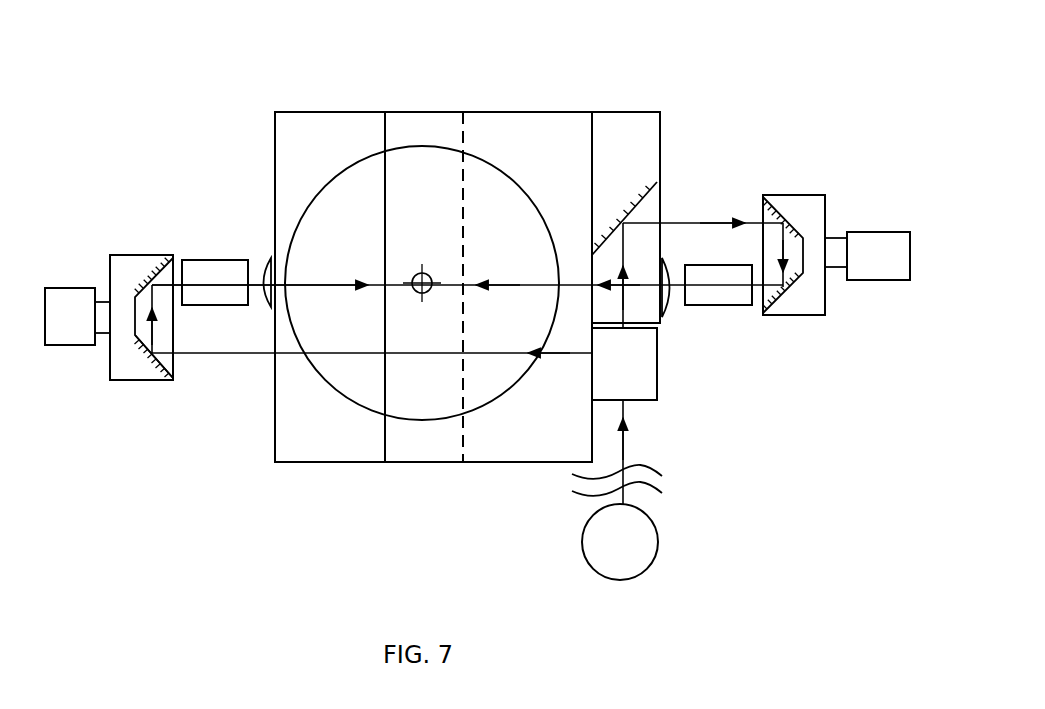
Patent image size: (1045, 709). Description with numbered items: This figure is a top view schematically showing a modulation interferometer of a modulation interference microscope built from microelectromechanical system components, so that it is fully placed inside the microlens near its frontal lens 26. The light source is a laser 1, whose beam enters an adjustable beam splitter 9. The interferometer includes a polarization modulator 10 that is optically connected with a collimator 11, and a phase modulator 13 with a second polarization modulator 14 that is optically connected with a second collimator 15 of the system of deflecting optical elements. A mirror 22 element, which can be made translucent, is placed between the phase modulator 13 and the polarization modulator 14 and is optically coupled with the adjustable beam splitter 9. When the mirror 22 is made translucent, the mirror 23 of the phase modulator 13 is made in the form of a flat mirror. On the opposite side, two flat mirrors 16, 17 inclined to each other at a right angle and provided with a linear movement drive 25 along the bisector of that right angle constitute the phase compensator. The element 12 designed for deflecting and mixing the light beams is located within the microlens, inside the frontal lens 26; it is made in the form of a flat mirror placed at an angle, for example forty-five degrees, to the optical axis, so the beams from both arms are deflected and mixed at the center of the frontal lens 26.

The laser 1 is at (628, 537).
The adjustable beam splitter 9 is at (632, 362).
The polarization modulator 10 is at (193, 275).
The collimator 11 is at (265, 265).
The element designed for deflecting and mixing the light beams 12 is at (417, 292).
The phase modulator 13 is at (897, 245).
The second polarization modulator 14 is at (708, 288).
The second collimator 15 is at (673, 260).
The flat mirror 16 is at (152, 278).
The flat mirror 17 is at (152, 365).
The mirror element that can be made translucent 22 is at (622, 212).
The mirror of the phase modulator 23 is at (802, 220).
The linear movement drive 25 is at (58, 325).
The frontal lens 26 is at (335, 233).